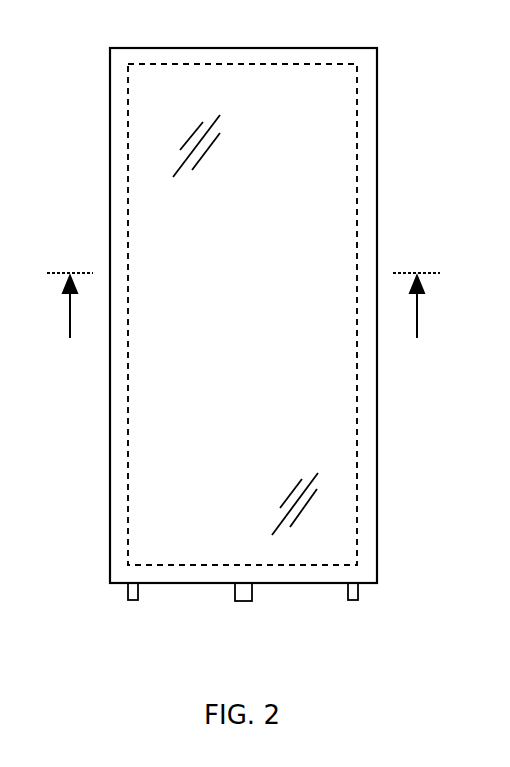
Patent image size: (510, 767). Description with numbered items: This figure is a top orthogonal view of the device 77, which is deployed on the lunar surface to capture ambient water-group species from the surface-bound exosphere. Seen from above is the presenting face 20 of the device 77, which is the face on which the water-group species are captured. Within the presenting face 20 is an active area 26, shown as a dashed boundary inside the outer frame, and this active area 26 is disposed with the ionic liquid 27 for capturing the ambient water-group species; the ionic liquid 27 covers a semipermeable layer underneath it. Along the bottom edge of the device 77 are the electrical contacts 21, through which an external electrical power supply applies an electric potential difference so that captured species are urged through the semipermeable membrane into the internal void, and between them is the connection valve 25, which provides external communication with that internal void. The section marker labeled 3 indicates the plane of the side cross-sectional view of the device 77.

The device 77 is at (404, 106).
The presenting face 20 is at (366, 475).
The active area 26 is at (357, 216).
The ionic liquid 27 is at (228, 347).
The electrical contacts 21 is at (127, 592).
The connection valve 25 is at (235, 592).
The section line 3- 3 is at (243, 323).